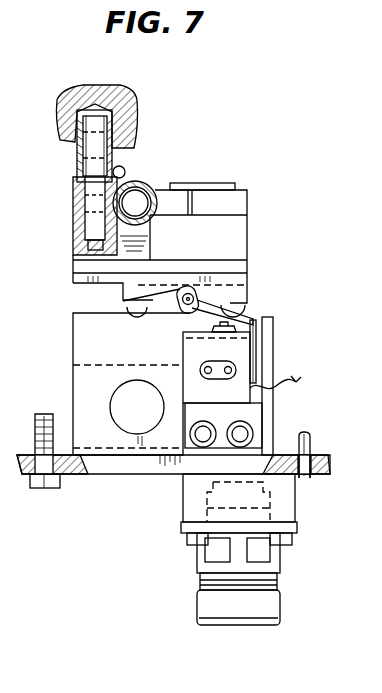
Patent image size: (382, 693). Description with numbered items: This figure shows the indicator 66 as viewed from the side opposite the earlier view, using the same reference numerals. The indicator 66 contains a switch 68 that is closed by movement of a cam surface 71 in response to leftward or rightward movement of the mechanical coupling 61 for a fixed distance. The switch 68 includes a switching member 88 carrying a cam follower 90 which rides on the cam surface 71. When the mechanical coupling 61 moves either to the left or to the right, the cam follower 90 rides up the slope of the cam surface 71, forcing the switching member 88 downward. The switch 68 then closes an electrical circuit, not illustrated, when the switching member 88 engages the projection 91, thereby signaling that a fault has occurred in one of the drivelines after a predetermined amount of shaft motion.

The mechanical coupling 61 is at (130, 170).
The indicator 66 is at (302, 244).
The switch 68 is at (275, 398).
The cam surface 71 is at (128, 322).
The switching member 88 is at (256, 316).
The cam follower 90 is at (197, 283).
The projection 91 is at (190, 323).